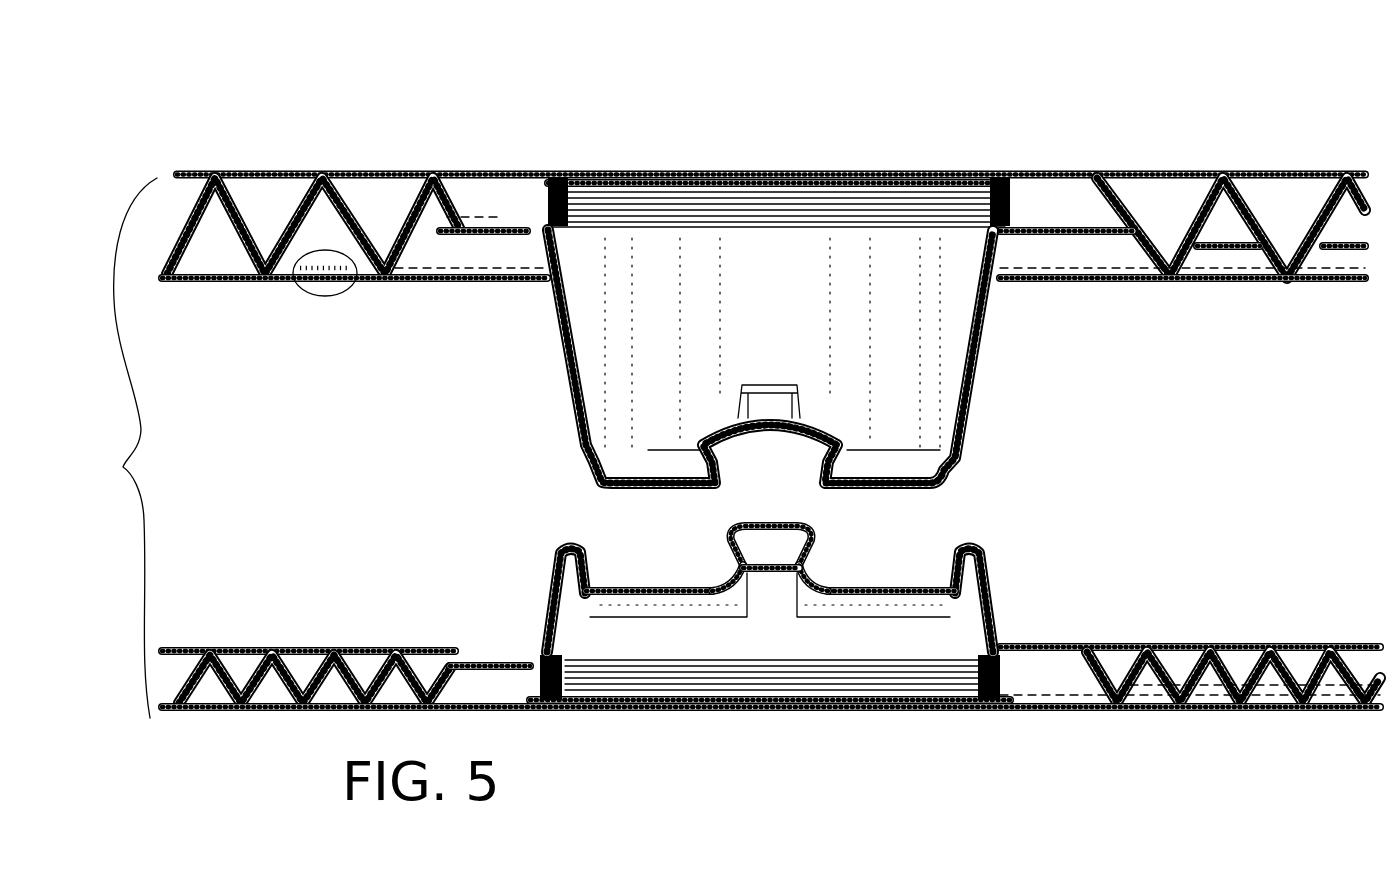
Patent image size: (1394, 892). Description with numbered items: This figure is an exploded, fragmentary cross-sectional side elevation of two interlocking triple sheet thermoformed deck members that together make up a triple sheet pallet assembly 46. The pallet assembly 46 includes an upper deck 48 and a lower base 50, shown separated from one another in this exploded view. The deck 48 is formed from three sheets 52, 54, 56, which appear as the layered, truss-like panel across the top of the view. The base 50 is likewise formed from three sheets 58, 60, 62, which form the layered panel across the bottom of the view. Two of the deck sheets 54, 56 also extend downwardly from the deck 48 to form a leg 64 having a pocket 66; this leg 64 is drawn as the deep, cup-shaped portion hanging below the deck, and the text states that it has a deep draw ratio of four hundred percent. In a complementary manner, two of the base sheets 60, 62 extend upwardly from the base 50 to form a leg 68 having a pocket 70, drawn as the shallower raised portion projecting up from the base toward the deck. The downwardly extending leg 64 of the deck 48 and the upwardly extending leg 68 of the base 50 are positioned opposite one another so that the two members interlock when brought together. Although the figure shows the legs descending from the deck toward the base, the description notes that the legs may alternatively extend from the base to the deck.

The triple sheet pallet assembly 46 is at (112, 448).
The deck 48 is at (763, 203).
The base 50 is at (771, 674).
The sheet 52 is at (298, 170).
The sheet 54 is at (287, 215).
The sheet 56 is at (229, 283).
The sheet 58 is at (220, 710).
The sheet 60 is at (237, 692).
The sheet 62 is at (310, 648).
The leg 64 is at (726, 330).
The pocket 66 is at (587, 363).
The leg 68 is at (724, 591).
The pocket 70 is at (575, 632).